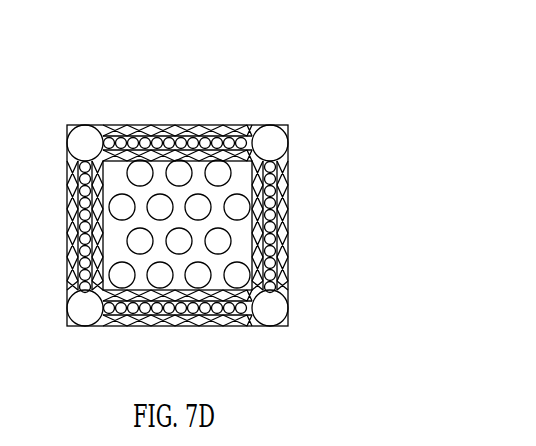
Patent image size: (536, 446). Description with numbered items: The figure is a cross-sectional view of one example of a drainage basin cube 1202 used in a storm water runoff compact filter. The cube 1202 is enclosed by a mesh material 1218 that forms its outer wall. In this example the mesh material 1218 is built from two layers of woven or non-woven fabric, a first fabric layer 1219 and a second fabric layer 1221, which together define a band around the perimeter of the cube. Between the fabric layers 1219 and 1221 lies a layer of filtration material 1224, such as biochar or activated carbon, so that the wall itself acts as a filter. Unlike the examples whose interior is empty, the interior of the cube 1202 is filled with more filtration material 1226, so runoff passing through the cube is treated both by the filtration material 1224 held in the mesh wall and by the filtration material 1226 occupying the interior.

The cube 1202 is at (52, 283).
The mesh material 1218 is at (206, 116).
The fabric layer 1219 is at (152, 124).
The fabric layer 1221 is at (126, 127).
The filtration material 1224 is at (271, 199).
The filtration material 1226 is at (217, 245).